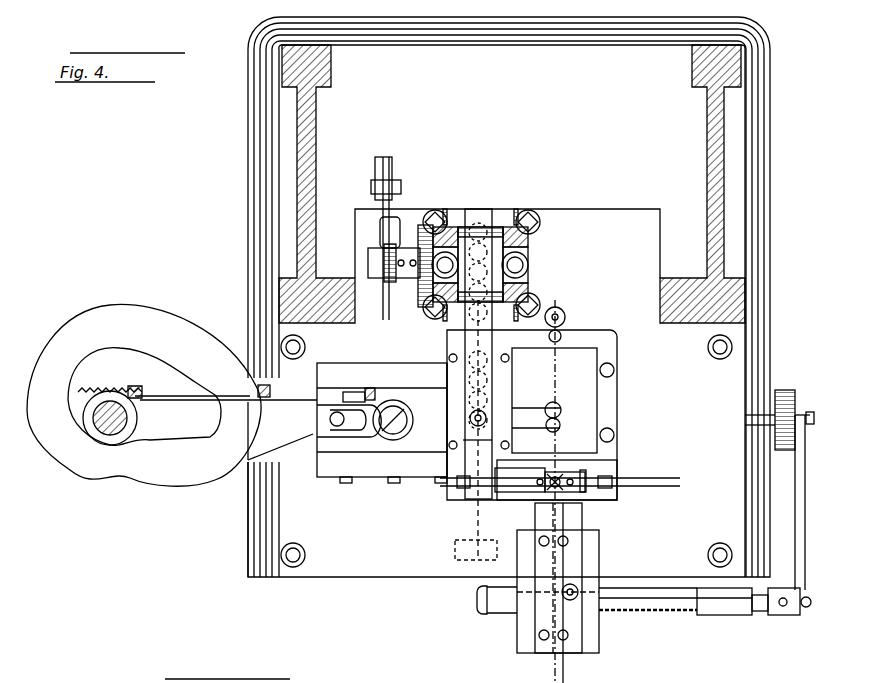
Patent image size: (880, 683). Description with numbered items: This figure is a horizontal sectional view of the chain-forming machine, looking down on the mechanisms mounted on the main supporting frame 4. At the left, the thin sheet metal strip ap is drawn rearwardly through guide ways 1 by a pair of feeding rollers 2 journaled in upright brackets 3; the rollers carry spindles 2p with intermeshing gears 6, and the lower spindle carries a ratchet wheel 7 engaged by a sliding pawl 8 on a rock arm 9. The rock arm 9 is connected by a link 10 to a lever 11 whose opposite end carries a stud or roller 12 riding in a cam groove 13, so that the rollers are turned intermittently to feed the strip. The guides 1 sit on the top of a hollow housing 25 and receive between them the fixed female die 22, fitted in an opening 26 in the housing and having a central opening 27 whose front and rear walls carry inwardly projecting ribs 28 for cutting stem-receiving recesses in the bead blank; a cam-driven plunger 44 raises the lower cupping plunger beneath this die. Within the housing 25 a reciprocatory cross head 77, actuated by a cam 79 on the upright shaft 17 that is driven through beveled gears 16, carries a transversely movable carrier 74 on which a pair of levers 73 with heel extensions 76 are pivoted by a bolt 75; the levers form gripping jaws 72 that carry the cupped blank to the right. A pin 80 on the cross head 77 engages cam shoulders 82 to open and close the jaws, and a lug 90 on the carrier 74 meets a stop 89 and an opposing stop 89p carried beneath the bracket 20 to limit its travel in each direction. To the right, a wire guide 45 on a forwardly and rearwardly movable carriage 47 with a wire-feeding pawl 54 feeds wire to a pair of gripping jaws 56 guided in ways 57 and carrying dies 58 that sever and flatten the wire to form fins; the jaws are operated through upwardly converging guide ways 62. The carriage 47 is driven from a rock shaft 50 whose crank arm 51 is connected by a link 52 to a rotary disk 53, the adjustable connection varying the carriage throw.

The guide ways 1 is at (466, 376).
The feeding rollers 2 is at (486, 230).
The spindles 2p is at (366, 266).
The upright brackets 3 is at (452, 222).
The main supporting frame 4 is at (762, 372).
The intermeshing gears 6 is at (426, 226).
The ratchet wheel 7 is at (378, 282).
The sliding pawl 8 is at (600, 483).
The rock arm 9 is at (384, 240).
The link 10 is at (392, 184).
The lever 11 is at (386, 162).
The stud or roller 12 is at (570, 670).
The cam groove 13 is at (587, 597).
The beveled gears 16 is at (136, 392).
The upright shaft 17 is at (110, 440).
The bracket 20 is at (280, 298).
The female die 22 is at (447, 466).
The hollow bracket or housing 25 is at (586, 356).
The opening 26 is at (465, 446).
The central opening 27 is at (495, 426).
The ribs 28 is at (496, 416).
The plunger 44 is at (569, 420).
The guide 45 is at (556, 620).
The carriage 47 is at (598, 646).
The rock shaft 50 is at (668, 612).
The crank arm 51 is at (788, 620).
The link 52 is at (803, 548).
The rotary disk 53 is at (792, 402).
The wire-feeding pawl 54 is at (575, 590).
The gripping jaws 56 is at (592, 470).
The ways 57 is at (616, 500).
The coacting dies 58 is at (560, 474).
The guide ways 62 is at (618, 478).
The jaws 72 is at (575, 426).
The levers 73 is at (540, 412).
The carrier 74 is at (378, 442).
The pivotal pin or bolt 75 is at (395, 418).
The heel extensions 76 is at (338, 404).
The cross head 77 is at (315, 440).
The cam 79 is at (146, 306).
The stud or pin 80 is at (338, 430).
The cam shoulders 82 is at (330, 414).
The stop 89 is at (369, 388).
The stop 89p is at (270, 391).
The lug 90 is at (352, 390).
The thin sheet metal strip ap is at (462, 545).